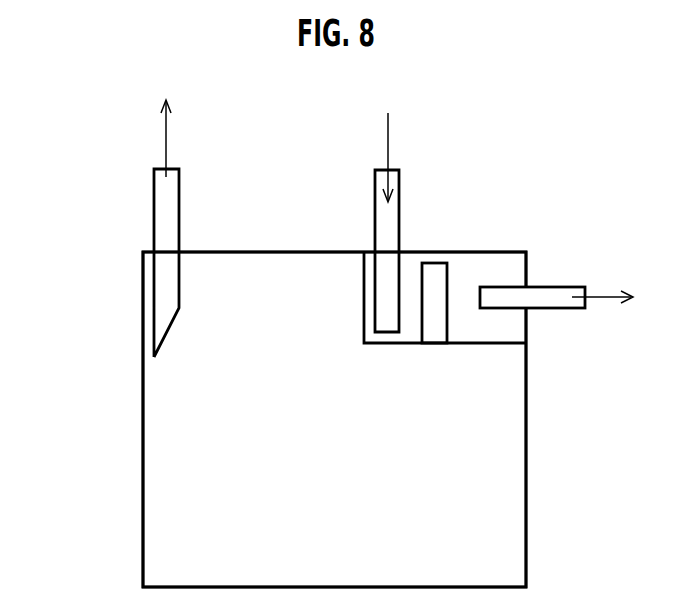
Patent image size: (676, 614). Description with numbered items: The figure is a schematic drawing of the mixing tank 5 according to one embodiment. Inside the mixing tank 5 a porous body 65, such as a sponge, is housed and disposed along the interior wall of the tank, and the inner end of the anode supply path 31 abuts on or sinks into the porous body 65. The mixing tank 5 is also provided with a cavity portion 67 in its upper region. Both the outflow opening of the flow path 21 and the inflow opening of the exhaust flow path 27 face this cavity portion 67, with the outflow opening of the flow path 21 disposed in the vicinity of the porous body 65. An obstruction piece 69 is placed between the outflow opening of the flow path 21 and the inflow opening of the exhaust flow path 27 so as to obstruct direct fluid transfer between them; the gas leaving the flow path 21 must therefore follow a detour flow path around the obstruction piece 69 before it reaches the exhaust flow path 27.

The mixing tank 5 is at (525, 484).
The porous body 65 is at (160, 499).
The anode supply path 31 is at (158, 213).
The flow path 21 is at (383, 213).
The cavity portion 67 is at (498, 263).
The obstruction piece 69 is at (440, 262).
The exhaust flow path 27 is at (568, 285).